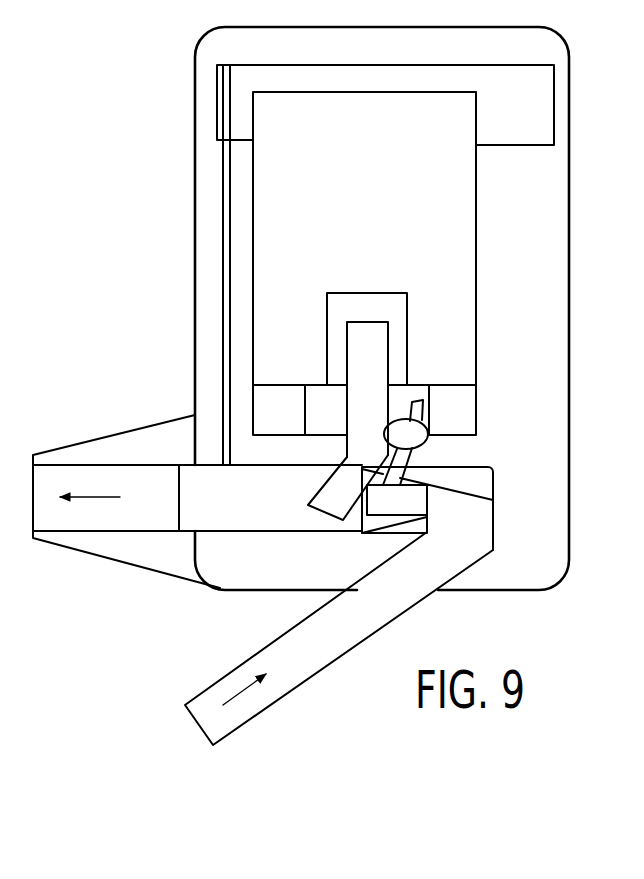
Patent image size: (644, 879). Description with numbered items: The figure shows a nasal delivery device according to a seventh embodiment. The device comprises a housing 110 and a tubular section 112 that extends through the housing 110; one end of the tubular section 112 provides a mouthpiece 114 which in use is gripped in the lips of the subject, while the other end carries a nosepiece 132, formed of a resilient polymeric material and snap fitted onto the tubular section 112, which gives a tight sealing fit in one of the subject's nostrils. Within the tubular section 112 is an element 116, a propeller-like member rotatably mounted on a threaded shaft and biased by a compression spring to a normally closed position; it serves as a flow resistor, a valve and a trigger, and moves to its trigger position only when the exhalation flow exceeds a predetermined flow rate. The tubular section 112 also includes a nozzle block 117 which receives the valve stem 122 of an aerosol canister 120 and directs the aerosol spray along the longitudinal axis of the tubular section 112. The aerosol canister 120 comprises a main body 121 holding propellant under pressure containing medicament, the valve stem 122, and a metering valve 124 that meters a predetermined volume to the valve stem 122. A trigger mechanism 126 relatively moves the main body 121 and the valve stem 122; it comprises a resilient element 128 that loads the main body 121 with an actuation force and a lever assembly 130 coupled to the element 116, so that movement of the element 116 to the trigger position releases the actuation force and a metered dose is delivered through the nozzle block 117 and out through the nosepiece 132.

The housing 110 is at (569, 252).
The tubular section 112 is at (313, 613).
The mouthpiece 114 is at (240, 727).
The element 116 is at (345, 532).
The nozzle block 117 is at (330, 490).
The aerosol canister 120 is at (482, 316).
The main body 121 is at (457, 211).
The valve stem 122 is at (358, 360).
The metering valve 124 is at (350, 303).
The trigger mechanism 126 is at (216, 221).
The resilient element 128 is at (223, 165).
The lever assembly 130 is at (440, 456).
The nosepiece 132 is at (128, 432).